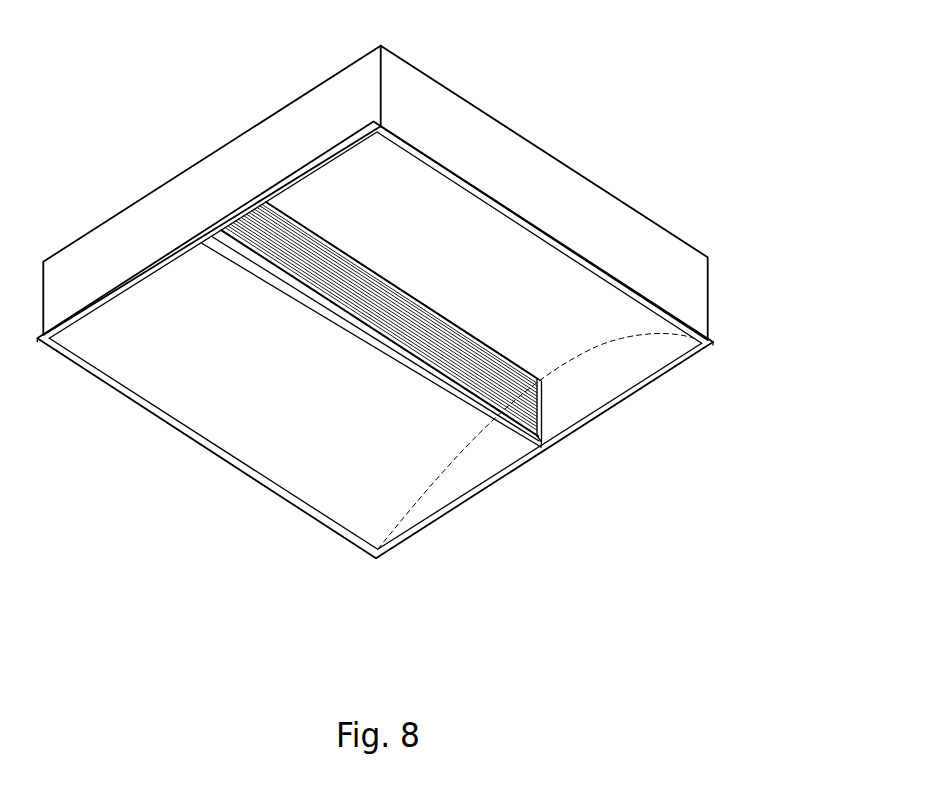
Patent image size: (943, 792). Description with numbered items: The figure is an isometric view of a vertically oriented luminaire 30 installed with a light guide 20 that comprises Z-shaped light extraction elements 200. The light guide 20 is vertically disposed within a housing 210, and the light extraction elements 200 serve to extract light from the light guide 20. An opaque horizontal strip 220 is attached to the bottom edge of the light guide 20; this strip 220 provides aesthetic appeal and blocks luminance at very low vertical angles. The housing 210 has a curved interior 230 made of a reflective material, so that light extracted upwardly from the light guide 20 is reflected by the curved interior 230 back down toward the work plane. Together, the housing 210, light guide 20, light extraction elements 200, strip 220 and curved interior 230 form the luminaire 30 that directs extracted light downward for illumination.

The luminaire 30 is at (654, 139).
The housing 210 is at (708, 280).
The light guide 20 is at (489, 341).
The light extraction elements 200 is at (490, 393).
The opaque horizontal strip 220 is at (530, 440).
The curved interior 230 is at (394, 444).